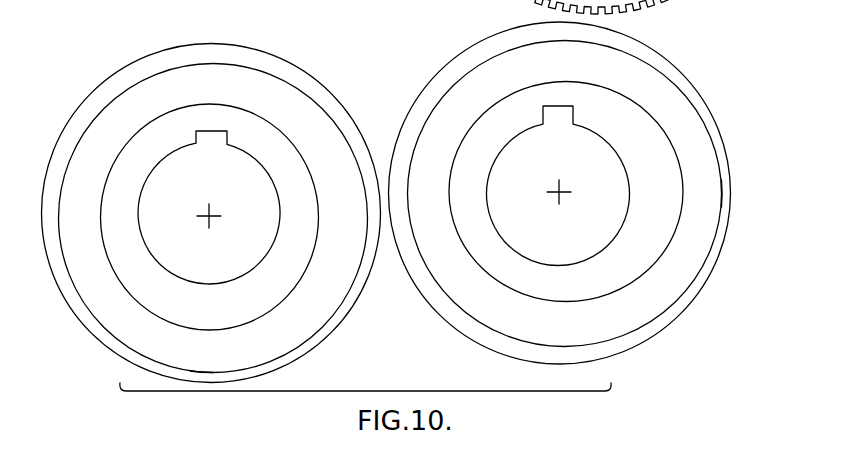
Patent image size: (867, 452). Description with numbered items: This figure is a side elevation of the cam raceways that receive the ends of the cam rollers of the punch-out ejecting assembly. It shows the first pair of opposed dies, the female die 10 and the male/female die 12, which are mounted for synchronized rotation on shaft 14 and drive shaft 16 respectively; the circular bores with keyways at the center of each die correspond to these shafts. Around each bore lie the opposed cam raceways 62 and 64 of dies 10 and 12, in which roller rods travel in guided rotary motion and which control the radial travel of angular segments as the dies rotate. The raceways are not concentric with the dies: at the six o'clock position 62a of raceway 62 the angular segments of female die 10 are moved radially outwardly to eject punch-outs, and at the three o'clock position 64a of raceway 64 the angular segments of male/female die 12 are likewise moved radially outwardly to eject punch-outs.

The female die 10 is at (268, 53).
The male/female die 12 is at (698, 88).
The shaft 14 is at (199, 202).
The drive shaft 16 is at (542, 179).
The cam raceway 62 is at (275, 113).
The 6 o'clock position 62a is at (229, 372).
The cam raceway 64 is at (617, 84).
The 3 o'clock position 64a is at (724, 189).